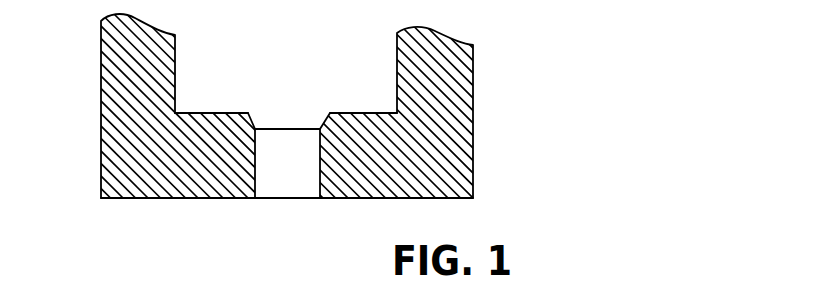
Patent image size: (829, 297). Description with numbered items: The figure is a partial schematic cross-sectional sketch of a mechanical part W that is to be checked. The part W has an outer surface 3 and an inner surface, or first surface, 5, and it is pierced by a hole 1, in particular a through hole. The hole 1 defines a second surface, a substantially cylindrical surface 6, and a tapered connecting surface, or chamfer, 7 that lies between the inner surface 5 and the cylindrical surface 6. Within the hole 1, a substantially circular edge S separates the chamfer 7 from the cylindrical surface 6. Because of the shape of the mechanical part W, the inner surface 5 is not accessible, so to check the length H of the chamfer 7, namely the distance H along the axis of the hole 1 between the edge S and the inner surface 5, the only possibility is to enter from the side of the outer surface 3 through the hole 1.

The hole 1 is at (308, 170).
The outer surface 3 is at (177, 198).
The inner surface 5 is at (203, 112).
The cylindrical surface 6 is at (262, 147).
The chamfer 7 is at (248, 114).
The circular edge S is at (262, 128).
The length of the chamfer H is at (292, 129).
The mechanical part W is at (463, 146).